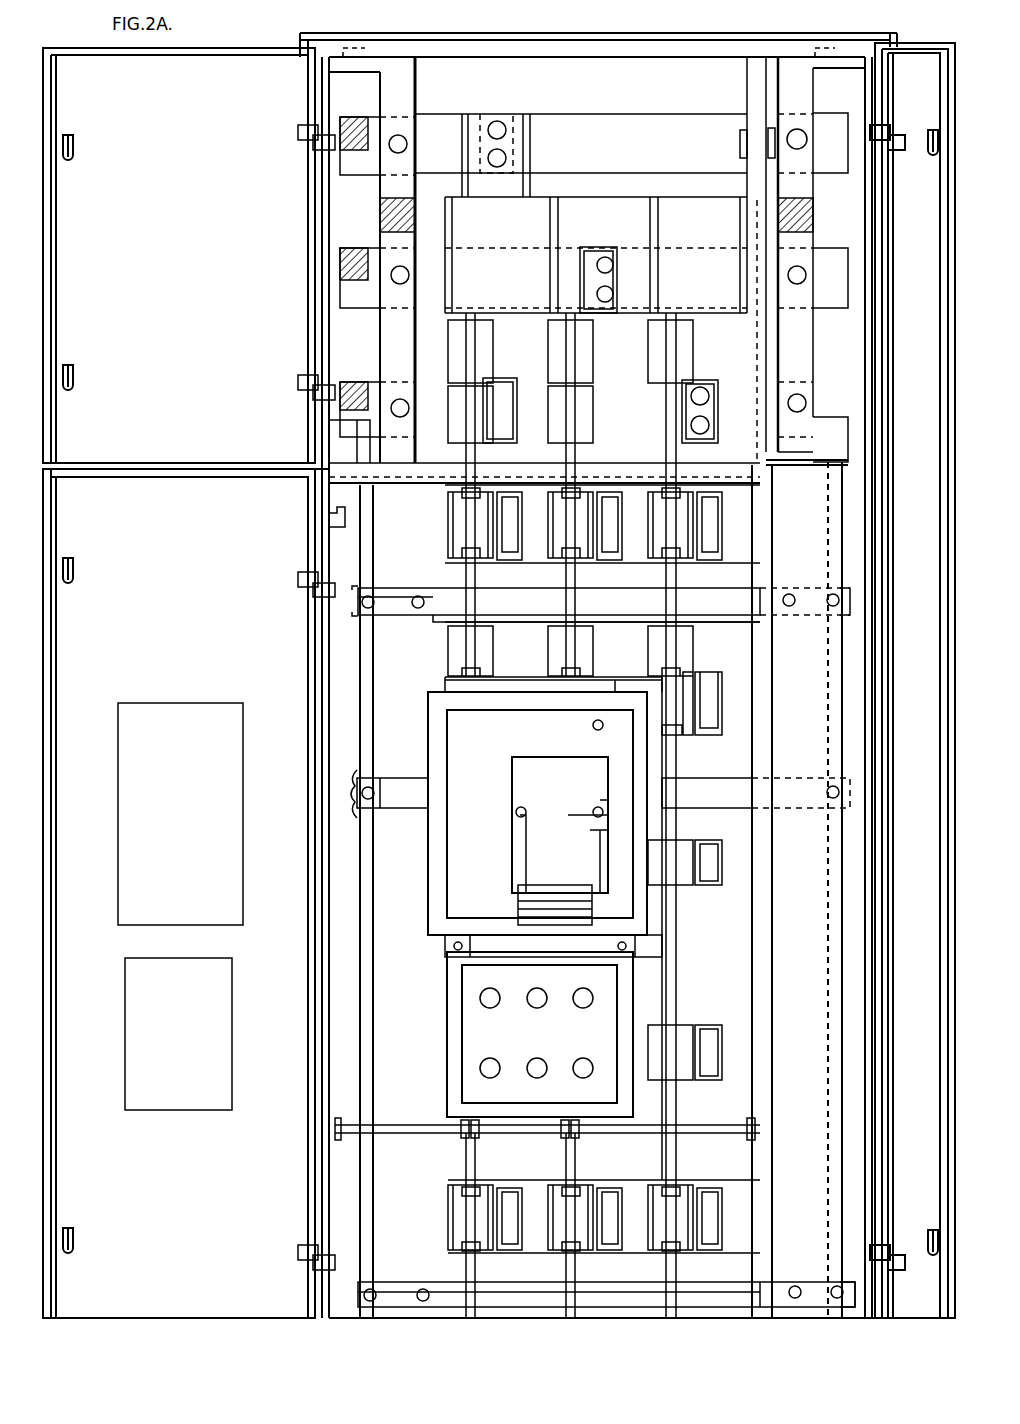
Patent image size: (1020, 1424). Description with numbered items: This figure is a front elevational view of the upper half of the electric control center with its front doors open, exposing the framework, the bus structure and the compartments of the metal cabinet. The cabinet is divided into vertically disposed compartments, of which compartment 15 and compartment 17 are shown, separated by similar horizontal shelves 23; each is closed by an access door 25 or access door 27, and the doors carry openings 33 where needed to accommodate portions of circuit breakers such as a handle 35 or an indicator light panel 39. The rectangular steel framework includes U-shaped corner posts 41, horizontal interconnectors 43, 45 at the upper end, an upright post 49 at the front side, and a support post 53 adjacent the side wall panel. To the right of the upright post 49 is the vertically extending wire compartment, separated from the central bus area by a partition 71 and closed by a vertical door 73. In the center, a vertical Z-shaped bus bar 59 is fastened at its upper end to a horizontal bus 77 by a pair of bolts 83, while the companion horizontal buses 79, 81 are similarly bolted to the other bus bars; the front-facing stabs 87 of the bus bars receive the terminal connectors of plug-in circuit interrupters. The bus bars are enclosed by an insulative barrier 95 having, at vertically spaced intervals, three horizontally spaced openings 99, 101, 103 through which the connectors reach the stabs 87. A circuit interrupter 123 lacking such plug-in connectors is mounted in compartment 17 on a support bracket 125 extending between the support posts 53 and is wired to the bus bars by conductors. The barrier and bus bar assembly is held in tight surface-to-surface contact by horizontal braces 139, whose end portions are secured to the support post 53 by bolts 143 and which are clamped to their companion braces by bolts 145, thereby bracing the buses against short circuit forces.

The compartment 15 is at (325, 198).
The compartment 17 is at (330, 930).
The horizontal shelf 23 is at (600, 470).
The access door 25 is at (192, 278).
The access door 27 is at (192, 573).
The opening 33 is at (150, 956).
The handle 35 is at (562, 866).
The indicator light panel 39 is at (472, 1038).
The U-shaped corner post 41 is at (870, 210).
The horizontal interconnector 43 is at (583, 46).
The horizontal interconnector 45 is at (822, 45).
The upright post 49 is at (767, 986).
The support post 53 is at (862, 1182).
The bus bar 59 is at (504, 192).
The partition 71 is at (830, 930).
The vertical door 73 is at (926, 826).
The horizontal bus 77 is at (593, 124).
The horizontal bus 79 is at (361, 253).
The horizontal bus 81 is at (372, 386).
The bolts 83 is at (706, 422).
The stab 87 is at (716, 607).
The barrier 95 is at (720, 226).
The opening 99 is at (455, 1219).
The opening 101 is at (560, 1236).
The opening 103 is at (660, 1200).
The circuit interrupter 123 is at (660, 945).
The support bracket 125 is at (406, 806).
The horizontal brace 139 is at (435, 1285).
The bolts 143 is at (828, 608).
The bolts 145 is at (791, 594).